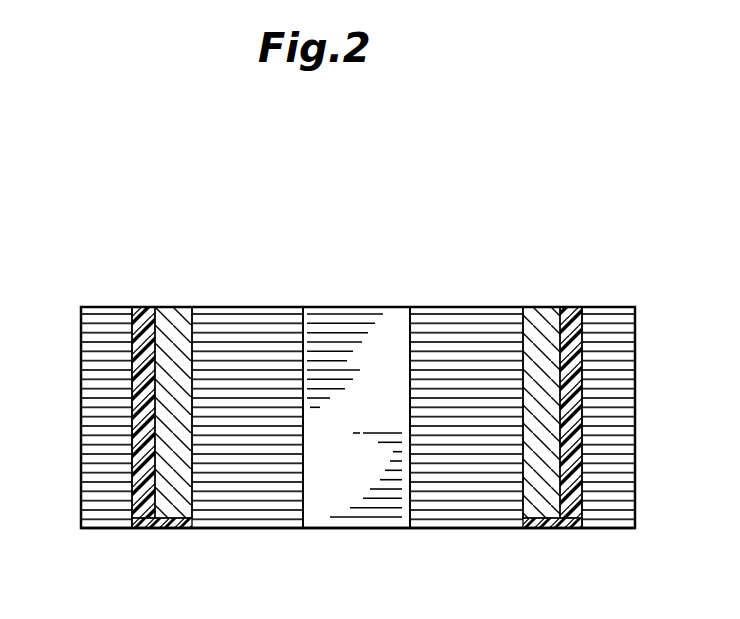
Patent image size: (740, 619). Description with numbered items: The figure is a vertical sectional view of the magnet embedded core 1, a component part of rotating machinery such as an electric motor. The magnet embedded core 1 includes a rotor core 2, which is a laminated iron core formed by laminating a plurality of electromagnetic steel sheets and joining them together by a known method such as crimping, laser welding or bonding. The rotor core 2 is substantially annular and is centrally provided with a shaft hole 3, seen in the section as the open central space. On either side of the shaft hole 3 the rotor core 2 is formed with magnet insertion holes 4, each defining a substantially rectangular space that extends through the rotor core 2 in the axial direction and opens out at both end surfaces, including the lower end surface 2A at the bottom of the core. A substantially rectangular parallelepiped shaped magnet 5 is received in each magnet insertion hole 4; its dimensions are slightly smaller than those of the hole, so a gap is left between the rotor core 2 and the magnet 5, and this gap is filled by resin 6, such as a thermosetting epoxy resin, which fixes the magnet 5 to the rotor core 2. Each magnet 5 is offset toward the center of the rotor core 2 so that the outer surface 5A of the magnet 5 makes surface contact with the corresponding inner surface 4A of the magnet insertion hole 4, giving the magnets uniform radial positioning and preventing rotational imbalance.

The magnet embedded core 1 is at (408, 226).
The rotor core 2 is at (620, 339).
The lower end surface of the rotor core 2A is at (282, 530).
The shaft hole 3 is at (313, 343).
The magnet insertion hole 4 is at (141, 313).
The inner surface of the magnet insertion hole 4A is at (190, 483).
The magnet 5 is at (158, 312).
The outer surface of the magnet 5A is at (192, 355).
The resin 6 is at (140, 400).